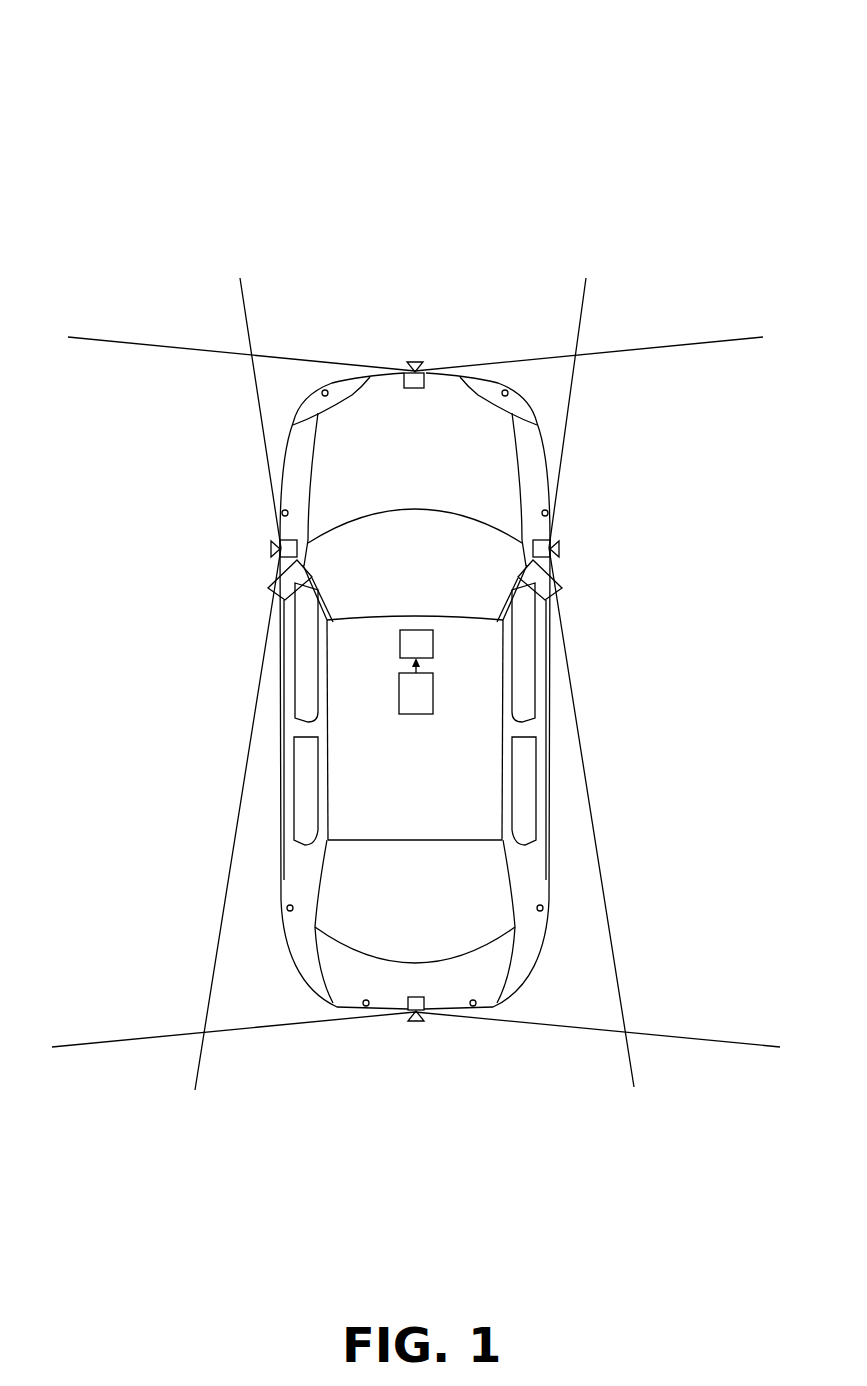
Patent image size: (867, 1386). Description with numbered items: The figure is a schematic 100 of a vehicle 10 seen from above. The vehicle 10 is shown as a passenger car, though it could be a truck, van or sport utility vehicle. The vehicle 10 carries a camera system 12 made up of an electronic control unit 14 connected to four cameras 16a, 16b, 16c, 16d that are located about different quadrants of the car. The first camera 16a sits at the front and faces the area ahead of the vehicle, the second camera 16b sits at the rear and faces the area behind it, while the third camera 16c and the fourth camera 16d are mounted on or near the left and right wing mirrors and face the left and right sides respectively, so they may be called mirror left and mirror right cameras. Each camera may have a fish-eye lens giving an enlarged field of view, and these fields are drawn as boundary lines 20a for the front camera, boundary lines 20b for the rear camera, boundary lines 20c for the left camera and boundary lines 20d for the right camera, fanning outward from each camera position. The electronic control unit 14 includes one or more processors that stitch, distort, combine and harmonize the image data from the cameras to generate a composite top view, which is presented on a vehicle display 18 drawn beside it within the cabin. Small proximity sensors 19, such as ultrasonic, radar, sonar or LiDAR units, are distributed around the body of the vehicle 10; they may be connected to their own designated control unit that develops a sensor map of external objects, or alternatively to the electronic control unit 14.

The schematic 100 is at (88, 99).
The vehicle 10 is at (493, 477).
The camera system 12 is at (356, 648).
The electronic control unit (ECU) 14 is at (435, 695).
The first camera 16a is at (404, 372).
The second camera 16b is at (424, 1010).
The third camera 16c is at (282, 540).
The fourth camera 16d is at (548, 540).
The vehicle display 18 is at (435, 644).
The proximity sensors 19 is at (508, 393).
The boundary lines 20a is at (143, 345).
The boundary lines 20b is at (128, 1040).
The boundary lines 20c is at (249, 300).
The boundary lines 20d is at (588, 300).